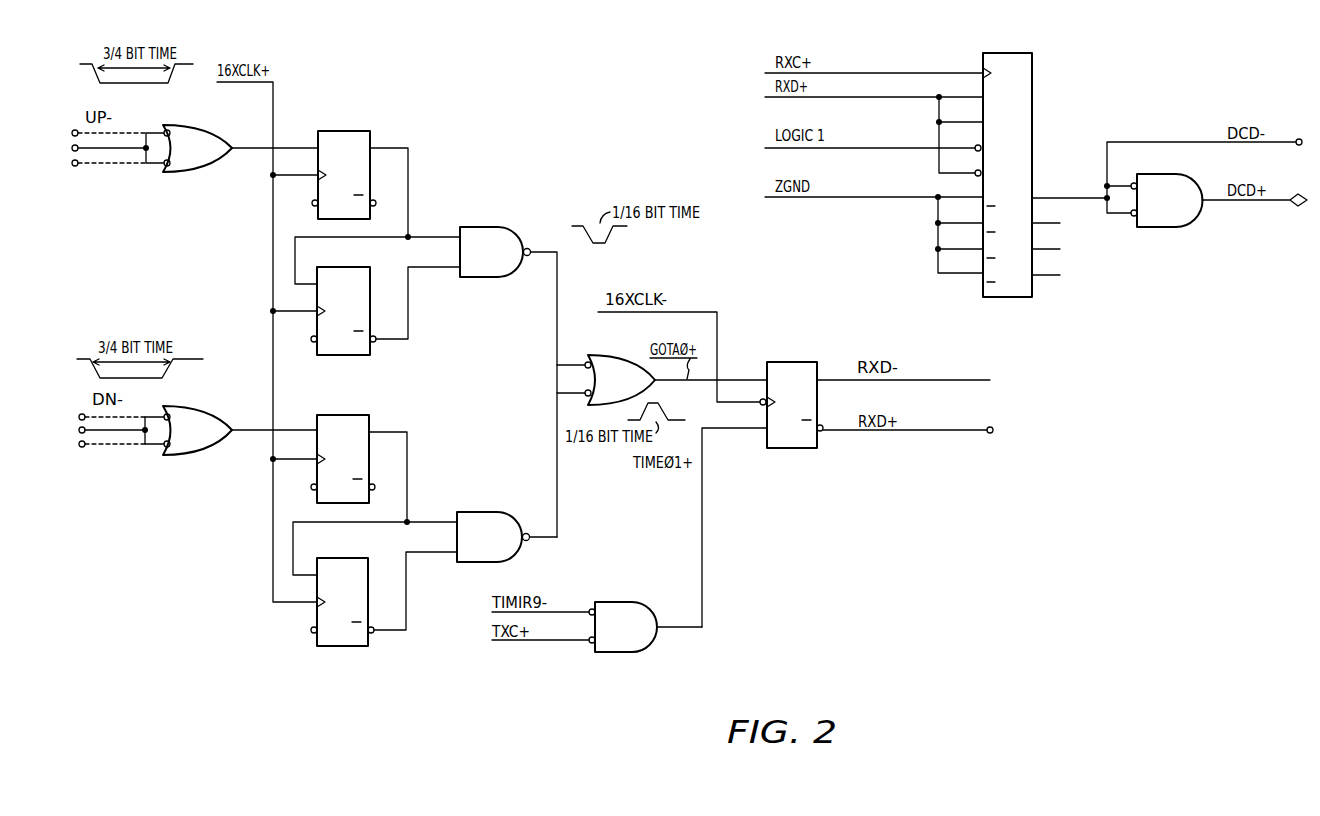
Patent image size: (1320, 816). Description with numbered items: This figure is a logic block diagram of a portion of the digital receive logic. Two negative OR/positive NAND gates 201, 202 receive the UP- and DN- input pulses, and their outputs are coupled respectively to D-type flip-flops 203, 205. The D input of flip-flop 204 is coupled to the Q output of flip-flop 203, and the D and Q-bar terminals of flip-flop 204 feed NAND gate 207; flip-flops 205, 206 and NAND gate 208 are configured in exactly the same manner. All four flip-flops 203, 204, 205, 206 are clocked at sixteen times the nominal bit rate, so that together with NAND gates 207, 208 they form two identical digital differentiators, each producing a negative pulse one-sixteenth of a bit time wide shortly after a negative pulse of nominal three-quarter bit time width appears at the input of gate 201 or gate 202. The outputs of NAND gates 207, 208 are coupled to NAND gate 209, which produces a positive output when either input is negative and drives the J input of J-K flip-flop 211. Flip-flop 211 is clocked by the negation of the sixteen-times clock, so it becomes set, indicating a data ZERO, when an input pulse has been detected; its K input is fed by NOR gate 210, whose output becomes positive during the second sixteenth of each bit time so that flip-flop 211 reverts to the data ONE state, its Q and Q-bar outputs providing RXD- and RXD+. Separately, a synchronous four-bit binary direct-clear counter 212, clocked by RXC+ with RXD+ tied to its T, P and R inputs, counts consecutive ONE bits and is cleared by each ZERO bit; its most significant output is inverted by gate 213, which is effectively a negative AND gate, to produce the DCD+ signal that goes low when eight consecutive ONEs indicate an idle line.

The negative OR/positive NAND gate 201 is at (207, 126).
The negative OR/positive NAND gate 202 is at (201, 395).
The quad D-type flip-flop 203 is at (352, 131).
The quad D-type flip-flop 204 is at (340, 267).
The quad D-type flip-flop 205 is at (350, 415).
The quad D-type flip-flop 206 is at (343, 558).
The NAND gate 207 is at (486, 227).
The NAND gate 208 is at (480, 512).
The NAND gate 209 is at (612, 355).
The NOR gate 210 is at (623, 602).
The J-K flip-flop 211 is at (793, 362).
The synchronous 4-bit binary direct-clear counter 212 is at (1017, 53).
The NOR gate 213 is at (1165, 175).